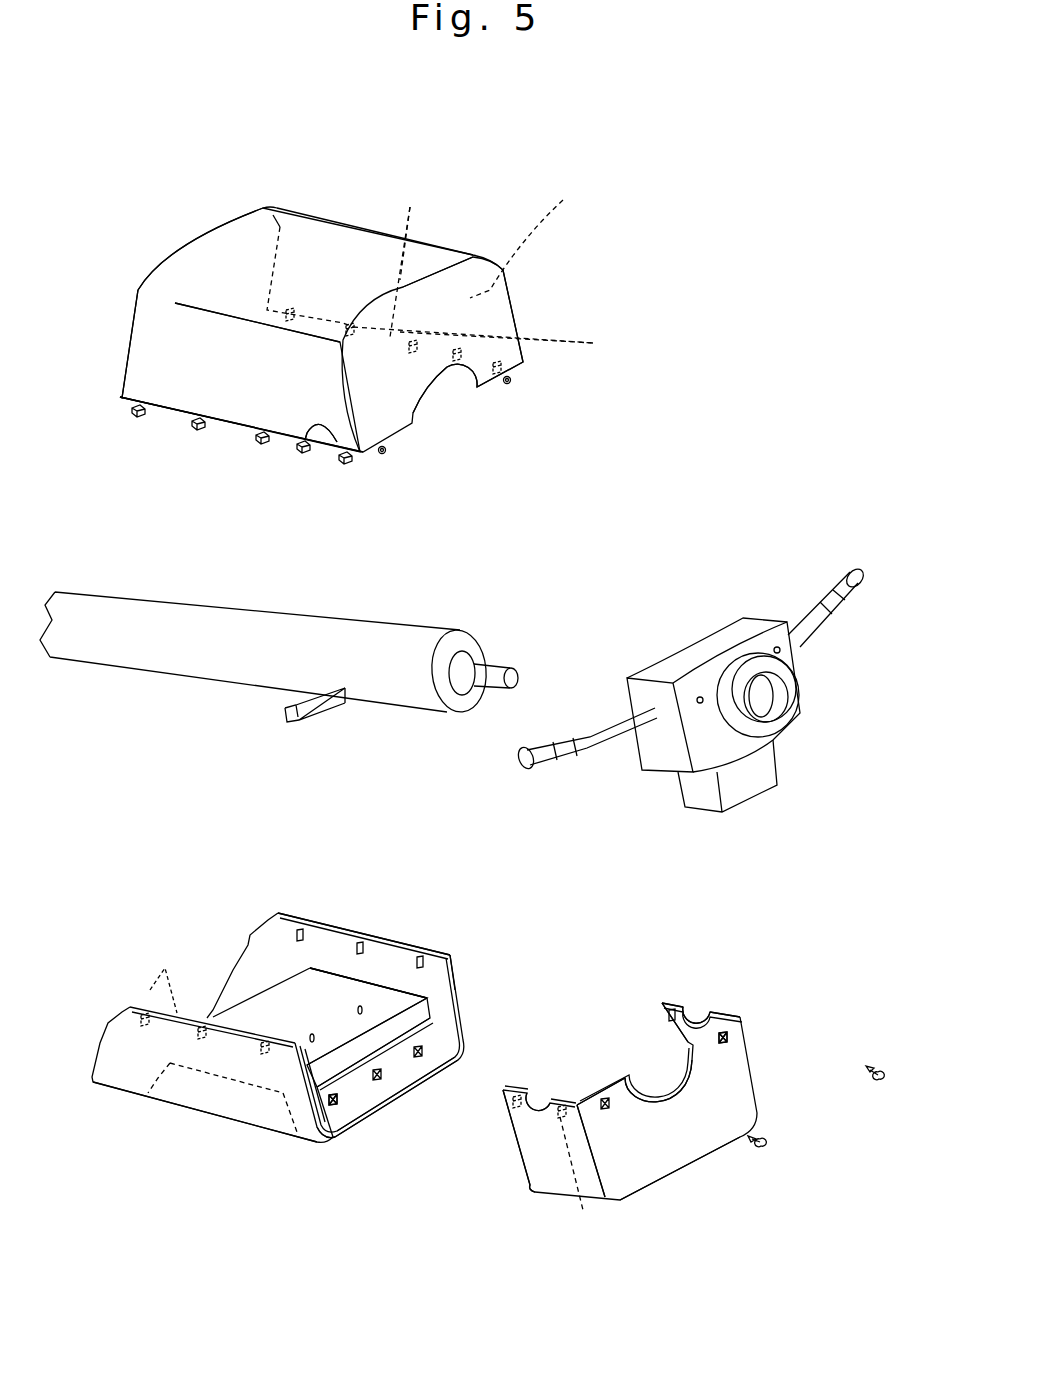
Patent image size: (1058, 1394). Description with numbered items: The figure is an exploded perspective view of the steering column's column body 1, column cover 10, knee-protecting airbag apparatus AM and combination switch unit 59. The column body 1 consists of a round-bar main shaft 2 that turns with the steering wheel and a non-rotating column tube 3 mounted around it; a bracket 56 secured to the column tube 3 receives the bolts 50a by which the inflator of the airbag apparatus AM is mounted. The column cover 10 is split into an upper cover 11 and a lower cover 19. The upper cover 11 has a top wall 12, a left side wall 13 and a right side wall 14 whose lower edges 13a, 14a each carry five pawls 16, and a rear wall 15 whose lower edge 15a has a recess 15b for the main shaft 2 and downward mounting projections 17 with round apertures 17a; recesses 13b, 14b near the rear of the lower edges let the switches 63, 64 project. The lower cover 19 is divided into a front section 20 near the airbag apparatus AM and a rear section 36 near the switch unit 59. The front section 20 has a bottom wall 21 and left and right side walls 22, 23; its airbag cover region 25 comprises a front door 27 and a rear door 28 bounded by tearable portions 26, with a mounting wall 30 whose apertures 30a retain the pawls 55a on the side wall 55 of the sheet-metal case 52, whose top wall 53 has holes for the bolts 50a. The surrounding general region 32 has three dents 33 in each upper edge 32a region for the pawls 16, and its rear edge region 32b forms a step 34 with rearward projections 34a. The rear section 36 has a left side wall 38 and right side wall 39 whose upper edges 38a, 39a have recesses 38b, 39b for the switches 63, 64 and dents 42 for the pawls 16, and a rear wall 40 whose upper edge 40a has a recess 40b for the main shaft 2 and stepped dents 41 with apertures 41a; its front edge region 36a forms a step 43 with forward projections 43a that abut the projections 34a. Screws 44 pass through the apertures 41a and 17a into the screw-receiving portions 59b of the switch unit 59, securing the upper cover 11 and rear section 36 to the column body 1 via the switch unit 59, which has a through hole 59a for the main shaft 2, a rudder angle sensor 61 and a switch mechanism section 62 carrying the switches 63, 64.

The column body 1 is at (331, 620).
The main shaft 2 is at (467, 660).
The column tube 3 is at (397, 640).
The column cover 10 is at (757, 233).
The upper cover 11 is at (463, 220).
The top wall 12 is at (347, 252).
The left side wall 13 is at (170, 353).
The lower edge 13a is at (232, 427).
The recess 13b is at (307, 430).
The right side wall 14 is at (485, 254).
The lower edge 14a is at (409, 230).
The recess 14b is at (469, 341).
The rear wall 15 is at (507, 327).
The lower edge 15a is at (487, 382).
The recess 15b is at (447, 372).
The pawls 16 is at (198, 430).
The mounting projections 17 is at (510, 378).
The aperture 17a is at (514, 384).
The lower cover 19 is at (603, 1017).
The front section 20 is at (460, 943).
The bottom wall 21 is at (343, 1120).
The left side wall 22 is at (112, 1072).
The right side wall 23 is at (337, 960).
The airbag cover region 25 is at (208, 1130).
The tearable portions 26 is at (215, 1080).
The front door 27 is at (158, 1092).
The rear door 28 is at (257, 1115).
The mounting wall 30 is at (462, 1027).
The apertures 30a is at (385, 1082).
The general region 32 is at (260, 912).
The upper edge 32a is at (458, 943).
The rear edge region 32b is at (377, 1117).
The dents 33 is at (300, 930).
The step 34 is at (475, 1035).
The projections 34a is at (515, 1147).
The rear section 36 is at (650, 985).
The bracket edge 36a is at (512, 1160).
The left side wall 38 is at (553, 1167).
The upper edge 38a is at (525, 1090).
The recess 38b is at (533, 1197).
The right side wall 39 is at (673, 1058).
The upper edge 39a is at (710, 1012).
The recess 39b is at (697, 1003).
The rear wall 40 is at (693, 1133).
The upper edge 40a is at (601, 1097).
The recess 40b is at (610, 1106).
The dents 41 is at (728, 1038).
The aperture 41a is at (730, 1042).
The dents 42 is at (670, 1010).
The step 43 is at (668, 1060).
The projections 43a is at (680, 1000).
The screws 44 is at (880, 1100).
The bolts 50a is at (313, 1007).
The case 52 is at (380, 980).
The top wall 53 is at (310, 983).
The side wall 55 is at (462, 1010).
The pawls 55a is at (335, 1113).
The bracket 56 is at (283, 717).
The combination switch unit 59 is at (757, 637).
The through hole 59a is at (773, 692).
The screw holes 59b is at (698, 697).
The rudder angle sensor 61 is at (777, 668).
The switch mechanism section 62 is at (691, 642).
The switch 63 is at (533, 740).
The switch 64 is at (837, 580).
The knee-protecting airbag apparatus AM is at (247, 987).